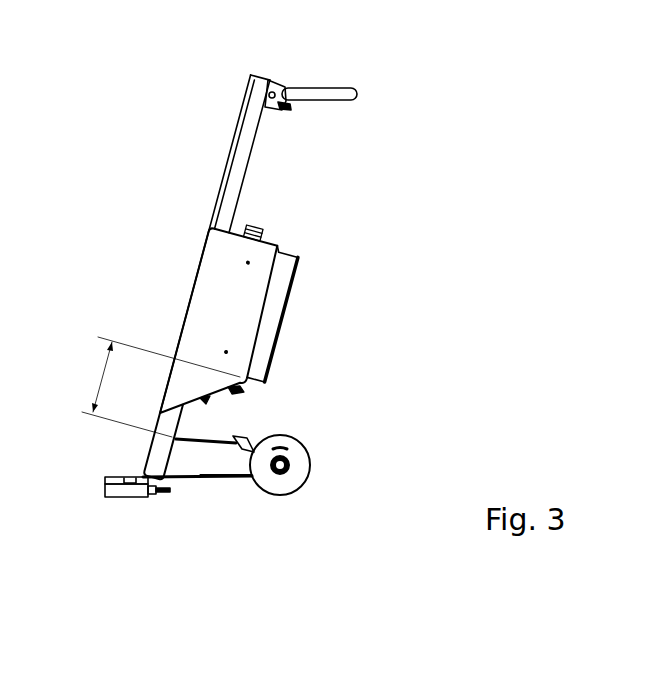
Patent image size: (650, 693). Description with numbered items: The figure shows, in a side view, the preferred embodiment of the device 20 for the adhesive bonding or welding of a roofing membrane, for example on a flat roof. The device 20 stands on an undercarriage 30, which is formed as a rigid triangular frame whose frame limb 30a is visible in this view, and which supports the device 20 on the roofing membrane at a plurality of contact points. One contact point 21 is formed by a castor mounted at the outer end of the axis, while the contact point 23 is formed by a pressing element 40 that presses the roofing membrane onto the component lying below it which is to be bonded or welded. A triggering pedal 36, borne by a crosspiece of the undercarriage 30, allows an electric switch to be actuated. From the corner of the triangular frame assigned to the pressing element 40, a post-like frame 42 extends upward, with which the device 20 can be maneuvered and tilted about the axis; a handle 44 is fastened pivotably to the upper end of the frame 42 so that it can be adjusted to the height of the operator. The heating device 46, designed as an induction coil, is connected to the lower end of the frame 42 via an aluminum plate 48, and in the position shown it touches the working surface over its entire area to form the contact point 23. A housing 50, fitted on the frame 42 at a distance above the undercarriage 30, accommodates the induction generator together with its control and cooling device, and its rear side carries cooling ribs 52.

The device 20 is at (324, 201).
The contact point 21 is at (282, 496).
The contact point 23 is at (127, 495).
The undercarriage 30 is at (198, 484).
The frame limb 30a is at (226, 468).
The triggering pedal 36 is at (254, 441).
The pressing element 40 is at (102, 493).
The post-like frame 42 is at (230, 143).
The handle 44 is at (320, 88).
The heating device 46 is at (140, 494).
The aluminum plate 48 is at (106, 476).
The housing 50 is at (215, 300).
The cooling ribs 52 is at (290, 285).